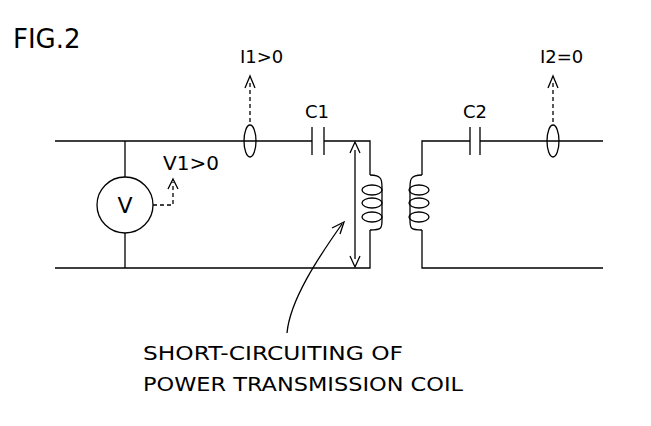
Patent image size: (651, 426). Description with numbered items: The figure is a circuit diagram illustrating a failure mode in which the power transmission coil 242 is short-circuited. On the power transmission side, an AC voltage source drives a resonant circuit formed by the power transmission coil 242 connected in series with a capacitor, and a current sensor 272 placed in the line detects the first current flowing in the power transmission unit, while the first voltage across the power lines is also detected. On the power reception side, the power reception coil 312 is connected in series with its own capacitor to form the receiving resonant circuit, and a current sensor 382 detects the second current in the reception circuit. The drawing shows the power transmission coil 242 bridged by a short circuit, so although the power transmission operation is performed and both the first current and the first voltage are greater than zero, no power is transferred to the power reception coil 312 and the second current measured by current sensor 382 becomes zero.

The current sensor 272 is at (257, 133).
The power transmission coil 242 is at (376, 232).
The power reception coil 312 is at (418, 175).
The current sensor 382 is at (559, 135).